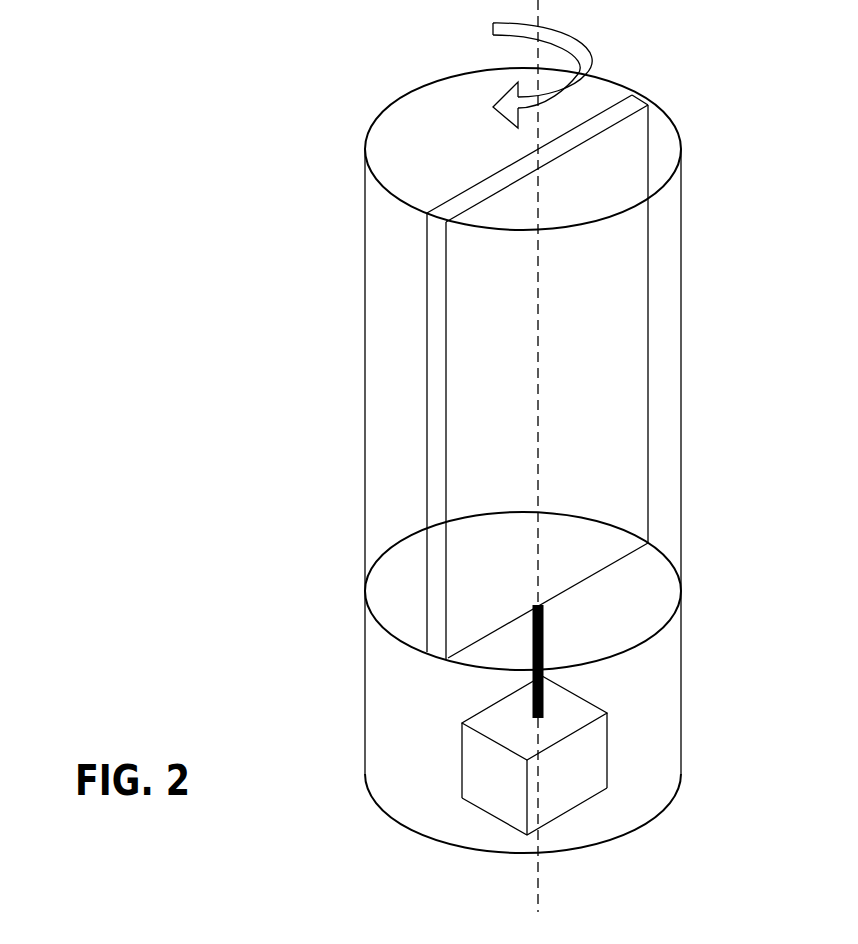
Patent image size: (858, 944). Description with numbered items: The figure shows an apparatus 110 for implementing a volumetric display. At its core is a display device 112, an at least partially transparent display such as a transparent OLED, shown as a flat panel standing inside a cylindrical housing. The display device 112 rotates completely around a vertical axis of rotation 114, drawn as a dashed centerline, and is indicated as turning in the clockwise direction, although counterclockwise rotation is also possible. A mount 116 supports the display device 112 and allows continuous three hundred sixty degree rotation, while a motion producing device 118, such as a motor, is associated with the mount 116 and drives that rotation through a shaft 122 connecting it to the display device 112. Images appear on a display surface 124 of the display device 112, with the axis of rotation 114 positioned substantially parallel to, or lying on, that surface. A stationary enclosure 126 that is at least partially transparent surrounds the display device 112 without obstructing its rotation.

The apparatus 110 is at (265, 197).
The display device 112 is at (425, 362).
The axis of rotation 114 is at (541, 320).
The mount 116 is at (365, 712).
The motion producing device 118 is at (608, 753).
The shaft 122 is at (543, 637).
The display surface 124 is at (600, 408).
The enclosure 126 is at (365, 457).